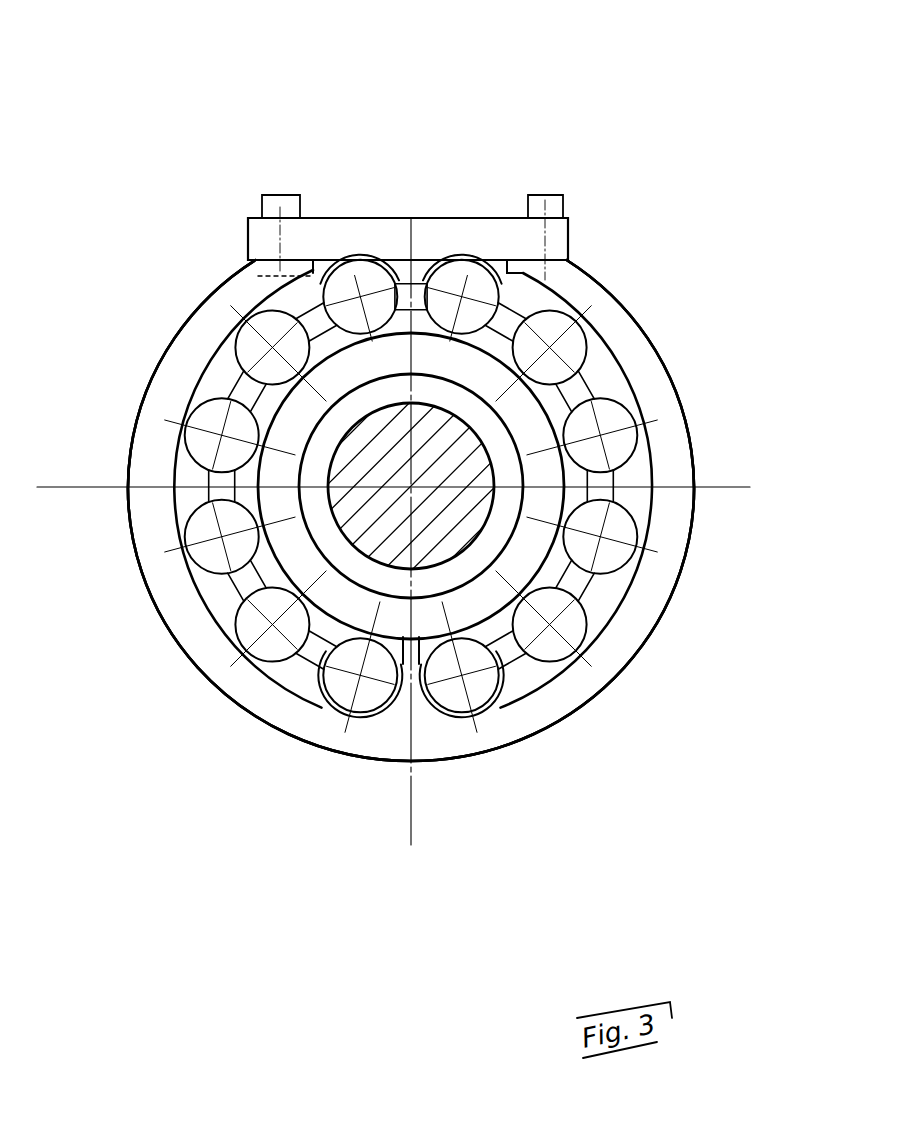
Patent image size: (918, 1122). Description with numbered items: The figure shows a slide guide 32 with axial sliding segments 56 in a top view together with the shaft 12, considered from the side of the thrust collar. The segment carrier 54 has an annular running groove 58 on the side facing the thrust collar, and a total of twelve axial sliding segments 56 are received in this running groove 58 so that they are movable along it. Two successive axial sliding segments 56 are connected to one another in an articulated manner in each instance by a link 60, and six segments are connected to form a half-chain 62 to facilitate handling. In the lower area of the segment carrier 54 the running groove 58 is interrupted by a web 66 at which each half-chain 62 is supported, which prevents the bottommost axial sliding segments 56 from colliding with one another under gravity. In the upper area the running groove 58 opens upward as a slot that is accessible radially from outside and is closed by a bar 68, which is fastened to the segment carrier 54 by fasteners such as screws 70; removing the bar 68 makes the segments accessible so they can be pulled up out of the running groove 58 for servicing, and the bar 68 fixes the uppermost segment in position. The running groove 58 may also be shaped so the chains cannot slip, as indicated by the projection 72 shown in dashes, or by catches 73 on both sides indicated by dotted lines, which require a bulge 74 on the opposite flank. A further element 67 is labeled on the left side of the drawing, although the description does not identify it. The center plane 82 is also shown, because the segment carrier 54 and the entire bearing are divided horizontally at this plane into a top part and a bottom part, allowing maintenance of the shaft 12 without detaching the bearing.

The slide guide 32 is at (538, 73).
The shaft 12 is at (338, 518).
The segment carrier 54 is at (256, 690).
The axial sliding segments 56 is at (581, 640).
The running groove 58 is at (614, 378).
The link 60 is at (524, 655).
The half-chain 62 is at (655, 418).
The web 66 is at (400, 703).
The outer ring 67 is at (170, 423).
The bar 68 is at (435, 230).
The screws 70 is at (555, 200).
The projection 72 is at (397, 281).
The catches 73 is at (295, 317).
The bulge 74 is at (245, 292).
The center plane 82 is at (741, 484).